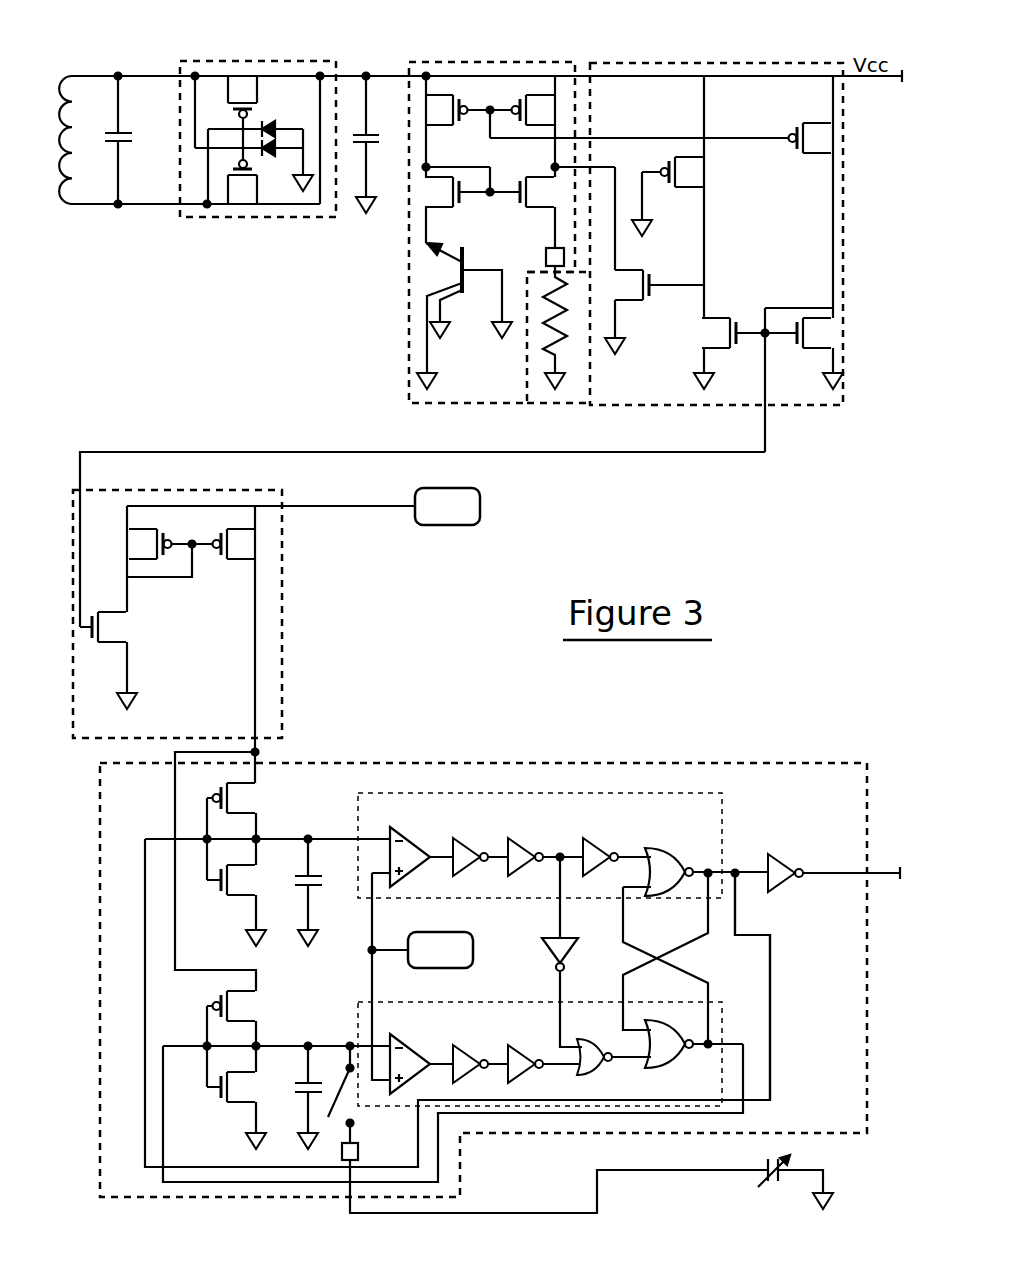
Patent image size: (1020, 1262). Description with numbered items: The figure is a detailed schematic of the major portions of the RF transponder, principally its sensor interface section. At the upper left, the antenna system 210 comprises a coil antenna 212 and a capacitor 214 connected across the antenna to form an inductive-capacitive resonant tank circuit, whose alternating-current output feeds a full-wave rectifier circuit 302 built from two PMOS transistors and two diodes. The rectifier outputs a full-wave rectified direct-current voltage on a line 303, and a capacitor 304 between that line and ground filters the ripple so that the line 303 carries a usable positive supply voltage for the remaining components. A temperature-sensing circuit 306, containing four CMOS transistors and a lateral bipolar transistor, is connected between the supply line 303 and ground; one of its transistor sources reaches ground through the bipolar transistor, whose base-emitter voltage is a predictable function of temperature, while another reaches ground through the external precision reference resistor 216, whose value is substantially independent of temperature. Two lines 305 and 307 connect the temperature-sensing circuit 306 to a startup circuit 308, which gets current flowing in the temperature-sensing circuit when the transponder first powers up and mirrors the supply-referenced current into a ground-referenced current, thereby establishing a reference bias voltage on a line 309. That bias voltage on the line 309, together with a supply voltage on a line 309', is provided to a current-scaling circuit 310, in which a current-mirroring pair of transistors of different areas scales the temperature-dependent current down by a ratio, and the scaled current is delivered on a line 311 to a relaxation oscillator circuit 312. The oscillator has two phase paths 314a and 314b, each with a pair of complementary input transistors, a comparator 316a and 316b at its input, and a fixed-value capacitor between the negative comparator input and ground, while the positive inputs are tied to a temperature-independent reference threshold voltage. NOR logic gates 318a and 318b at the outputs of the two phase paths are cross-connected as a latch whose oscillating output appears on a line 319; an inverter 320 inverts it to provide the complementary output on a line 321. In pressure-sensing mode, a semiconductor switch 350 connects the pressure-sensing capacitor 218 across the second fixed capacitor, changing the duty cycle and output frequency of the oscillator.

The antenna system 210 is at (98, 56).
The coil antenna 212 is at (80, 178).
The capacitor 214 is at (118, 143).
The full-wave rectifier circuit 302 is at (205, 61).
The line 303 is at (388, 76).
The capacitor 304 is at (370, 143).
The temperature-sensing circuit 306 is at (490, 61).
The external resistor 216 is at (563, 343).
The line 307 is at (597, 166).
The line 305 is at (625, 136).
The startup circuit 308 is at (715, 62).
The line 309 is at (422, 521).
The line 309' is at (303, 496).
The current-scaling circuit 310 is at (213, 490).
The line 311 is at (258, 705).
The relaxation oscillator circuit 312 is at (458, 763).
The phase path 314a is at (457, 898).
The phase path 314b is at (460, 1002).
The comparator 316a is at (410, 835).
The comparator 316b is at (410, 1042).
The NOR logic gate 318a is at (647, 850).
The NOR logic gate 318b is at (648, 1067).
The line 319 is at (773, 1002).
The inverter 320 is at (778, 893).
The line 321 is at (883, 873).
The semiconductor switch 350 is at (392, 1087).
The pressure-sensing capacitor 218 is at (767, 1168).